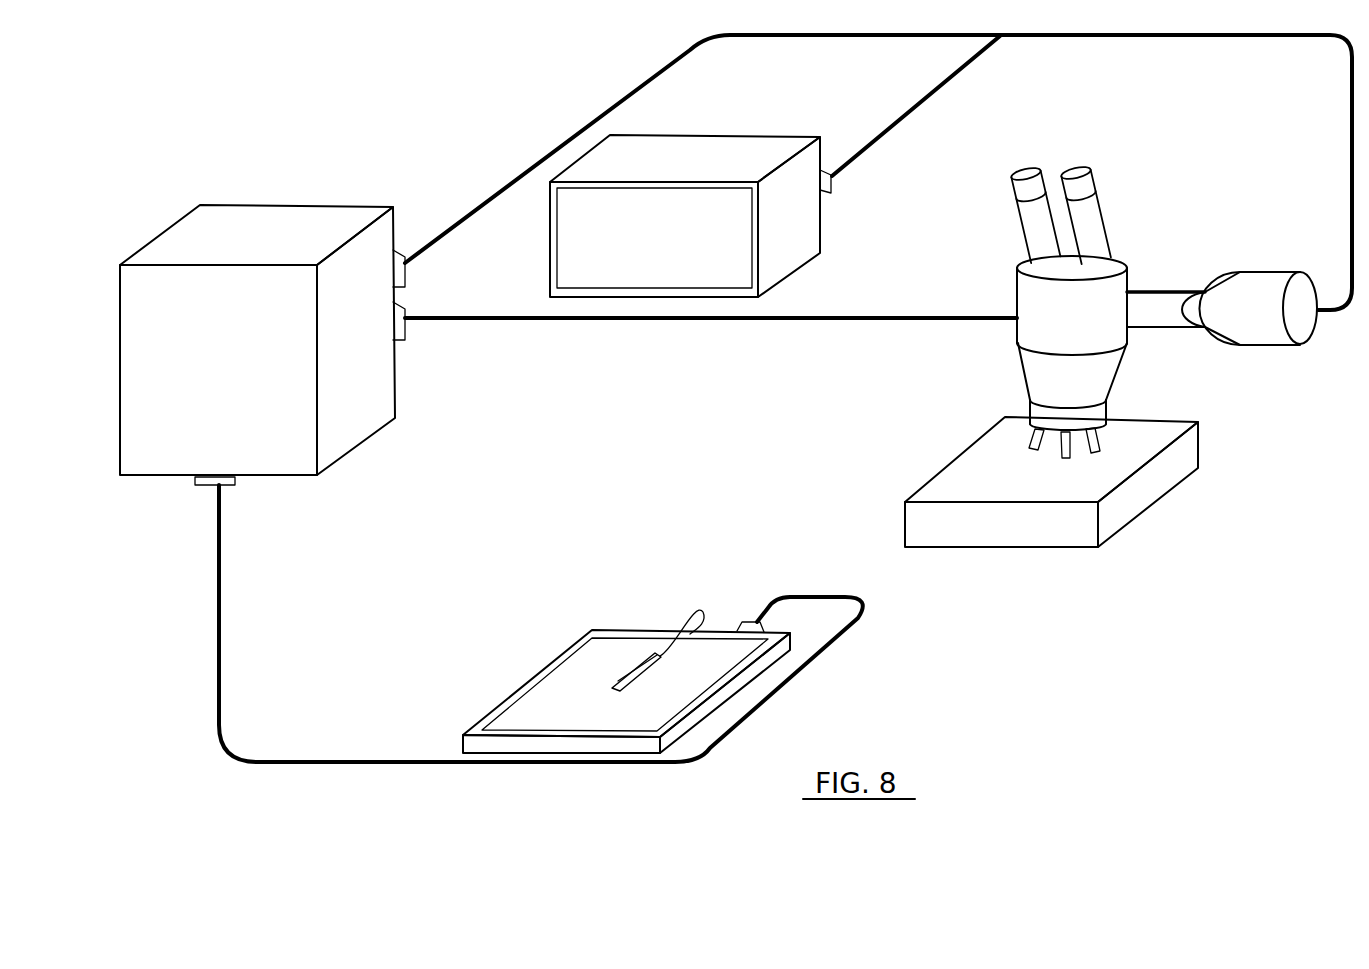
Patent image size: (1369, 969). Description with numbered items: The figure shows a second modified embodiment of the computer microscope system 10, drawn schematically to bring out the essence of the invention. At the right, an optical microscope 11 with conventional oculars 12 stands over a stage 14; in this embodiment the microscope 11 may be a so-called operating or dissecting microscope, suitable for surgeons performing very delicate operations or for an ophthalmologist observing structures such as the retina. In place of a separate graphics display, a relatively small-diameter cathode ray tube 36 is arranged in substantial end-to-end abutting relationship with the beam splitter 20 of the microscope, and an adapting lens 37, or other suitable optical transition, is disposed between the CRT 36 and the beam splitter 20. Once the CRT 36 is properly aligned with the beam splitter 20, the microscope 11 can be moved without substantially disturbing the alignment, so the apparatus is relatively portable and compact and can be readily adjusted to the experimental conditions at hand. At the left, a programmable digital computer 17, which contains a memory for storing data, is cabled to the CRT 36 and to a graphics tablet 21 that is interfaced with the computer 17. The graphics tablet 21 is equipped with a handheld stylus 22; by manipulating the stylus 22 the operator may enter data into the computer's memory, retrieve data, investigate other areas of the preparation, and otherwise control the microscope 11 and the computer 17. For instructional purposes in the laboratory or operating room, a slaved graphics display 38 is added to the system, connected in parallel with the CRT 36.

The computer microscope system 10 is at (440, 135).
The optical microscope 11 is at (1048, 302).
The oculars 12 is at (1074, 163).
The stage 14 is at (1015, 530).
The programmable digital computer 17 is at (252, 228).
The beam splitter 20 is at (1153, 312).
The graphics tablet 21 is at (580, 679).
The stylus 22 is at (625, 672).
The cathode ray tube 36 is at (1255, 287).
The adapting lens 37 is at (1218, 300).
The slaved graphics display 38 is at (703, 152).